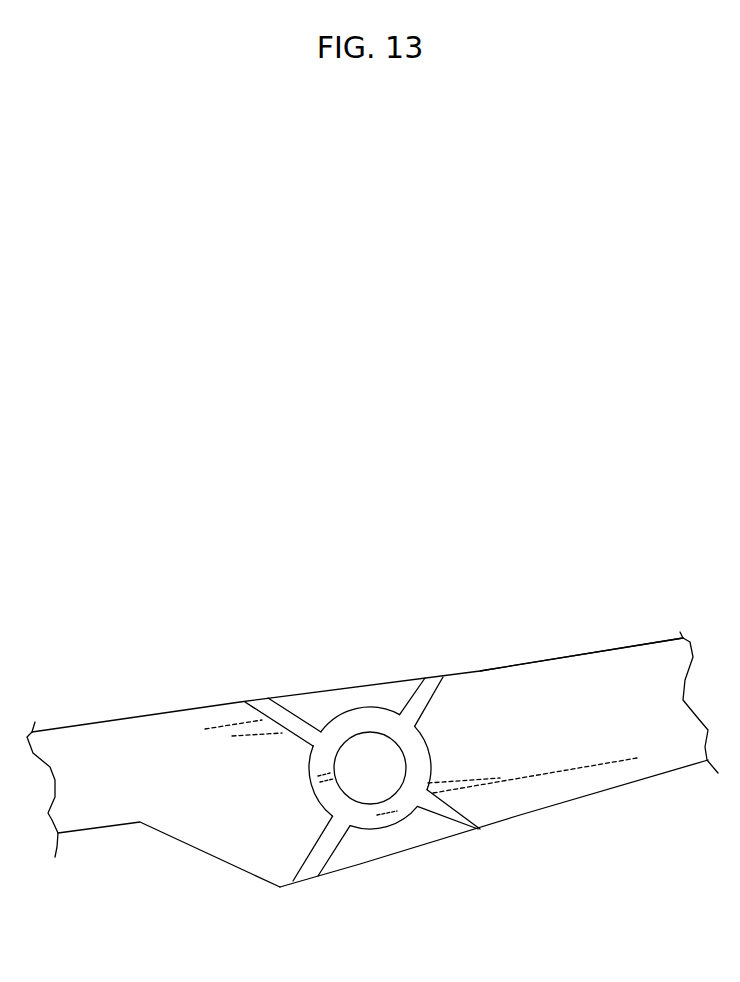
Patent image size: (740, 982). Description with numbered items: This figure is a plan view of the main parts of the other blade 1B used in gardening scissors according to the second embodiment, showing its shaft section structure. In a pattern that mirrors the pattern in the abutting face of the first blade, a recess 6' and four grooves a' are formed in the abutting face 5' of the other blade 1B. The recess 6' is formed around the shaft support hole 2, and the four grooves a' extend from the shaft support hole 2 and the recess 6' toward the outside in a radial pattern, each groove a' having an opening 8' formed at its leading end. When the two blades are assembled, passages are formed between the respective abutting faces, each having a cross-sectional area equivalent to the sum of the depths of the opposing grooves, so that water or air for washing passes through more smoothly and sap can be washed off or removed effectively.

The other blade 1B is at (164, 712).
The shaft support hole 2 is at (370, 753).
The abutting face 5' is at (581, 644).
The recess 6' is at (277, 858).
The opening 8' is at (382, 755).
The groove a' is at (362, 755).